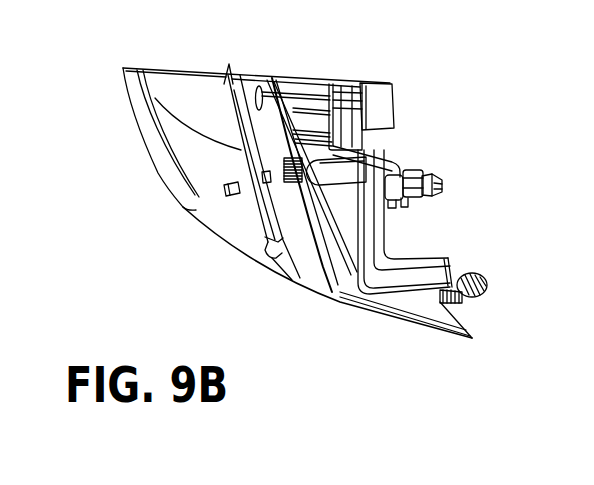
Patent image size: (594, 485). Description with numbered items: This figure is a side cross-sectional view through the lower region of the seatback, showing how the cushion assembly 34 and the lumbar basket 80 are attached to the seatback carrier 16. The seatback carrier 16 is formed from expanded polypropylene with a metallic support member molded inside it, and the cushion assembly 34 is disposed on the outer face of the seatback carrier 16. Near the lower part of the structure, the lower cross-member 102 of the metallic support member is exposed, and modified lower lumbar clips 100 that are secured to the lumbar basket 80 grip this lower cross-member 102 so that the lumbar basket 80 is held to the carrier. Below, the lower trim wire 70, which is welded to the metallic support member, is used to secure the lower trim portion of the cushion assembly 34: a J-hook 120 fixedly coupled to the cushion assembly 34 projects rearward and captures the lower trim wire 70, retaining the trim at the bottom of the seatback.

The seatback carrier 16 is at (307, 80).
The cushion assembly 34 is at (243, 217).
The lower trim wire 70 is at (467, 274).
The lumbar basket 80 is at (413, 168).
The lower lumbar clip 100 is at (423, 165).
The lower cross-member 102 is at (403, 162).
The J-hook 120 is at (482, 296).